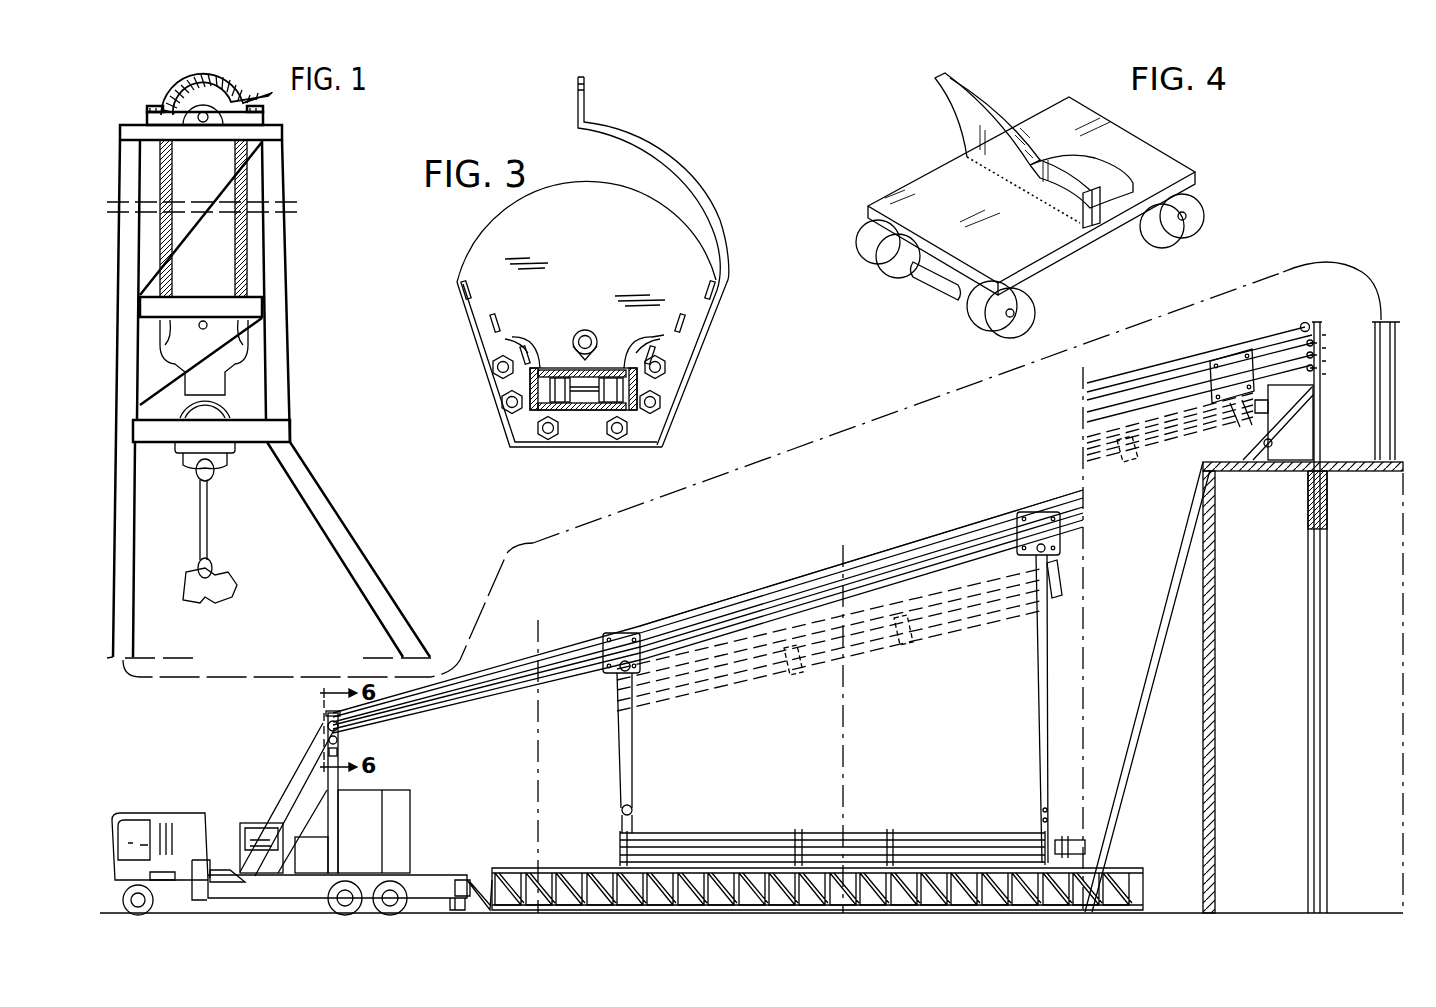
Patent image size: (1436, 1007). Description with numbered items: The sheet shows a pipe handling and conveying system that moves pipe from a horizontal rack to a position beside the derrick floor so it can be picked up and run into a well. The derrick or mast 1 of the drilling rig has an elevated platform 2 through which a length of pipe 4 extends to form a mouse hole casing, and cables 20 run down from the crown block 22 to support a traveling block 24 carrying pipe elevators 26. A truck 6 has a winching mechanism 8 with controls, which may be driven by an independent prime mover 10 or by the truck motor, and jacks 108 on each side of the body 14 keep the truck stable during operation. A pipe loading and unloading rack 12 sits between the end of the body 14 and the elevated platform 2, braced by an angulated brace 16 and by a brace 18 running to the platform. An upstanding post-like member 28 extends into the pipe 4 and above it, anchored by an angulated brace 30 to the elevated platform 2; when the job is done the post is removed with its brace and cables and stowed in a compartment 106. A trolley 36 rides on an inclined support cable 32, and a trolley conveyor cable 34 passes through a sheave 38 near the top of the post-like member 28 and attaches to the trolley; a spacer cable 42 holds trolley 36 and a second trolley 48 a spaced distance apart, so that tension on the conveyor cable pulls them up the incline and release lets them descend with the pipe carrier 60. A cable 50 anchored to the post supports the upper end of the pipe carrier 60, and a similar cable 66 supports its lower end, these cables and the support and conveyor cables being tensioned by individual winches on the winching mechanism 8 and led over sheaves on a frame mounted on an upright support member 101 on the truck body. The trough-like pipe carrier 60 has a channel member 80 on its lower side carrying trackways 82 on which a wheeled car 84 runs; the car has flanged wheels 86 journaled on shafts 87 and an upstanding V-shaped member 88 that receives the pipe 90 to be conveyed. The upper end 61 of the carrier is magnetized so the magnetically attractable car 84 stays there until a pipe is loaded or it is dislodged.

In FIG. 1, the derrick or mast 1 is at (292, 286).
In FIG. 1, the elevated platform 2 is at (1350, 473).
In FIG. 1, the pipe 4 is at (1327, 597).
In FIG. 1, the truck 6 is at (180, 806).
In FIG. 1, the winching mechanism 8 is at (236, 816).
In FIG. 1, the independent prime mover 10 is at (328, 848).
In FIG. 1, the pipe loading and unloading rack 12 is at (583, 866).
In FIG. 1, the body 14 is at (462, 872).
In FIG. 1, the angulated brace 16 is at (478, 880).
In FIG. 1, the brace 18 is at (1126, 768).
In FIG. 1, the cables 20 is at (248, 230).
In FIG. 1, the crown block 22 is at (185, 100).
In FIG. 1, the traveling block 24 is at (240, 325).
In FIG. 1, the pipe elevators 26 is at (208, 505).
In FIG. 1, the upstanding post-like member 28 is at (1323, 372).
In FIG. 1, the angulated brace 30 is at (1268, 445).
In FIG. 1, the support cable 32 is at (1293, 350).
In FIG. 1, the trolley conveyor cable 34 is at (960, 522).
In FIG. 1, the trolley 36 is at (1045, 505).
In FIG. 1, the sheave 38 is at (1308, 320).
In FIG. 1, the spacer cable 42 is at (722, 608).
In FIG. 1, the trolley 48 is at (615, 633).
In FIG. 1, the cable 50 is at (1062, 548).
In FIG. 1, the pipe carrier 60 is at (925, 640).
In FIG. 1, the upper end 61 is at (1048, 840).
In FIG. 1, the cable 66 is at (612, 725).
In FIG. 3, the channel member 80 is at (535, 412).
In FIG. 3, the trackways 82 is at (512, 405).
In FIG. 3, the wheeled car 84 is at (545, 331).
In FIG. 4, the wheeled car 84 is at (1172, 155).
In FIG. 3, the flanged wheels 86 is at (624, 385).
In FIG. 4, the flanged wheels 86 is at (1165, 243).
In FIG. 3, the shafts 87 is at (583, 395).
In FIG. 4, the shafts 87 is at (945, 288).
In FIG. 3, the upstanding V-shaped member 88 is at (618, 345).
In FIG. 4, the upstanding V-shaped member 88 is at (995, 112).
In FIG. 1, the pipe 90 is at (1085, 847).
In FIG. 3, the pipe 90 is at (580, 330).
In FIG. 1, the upright support member 101 is at (338, 747).
In FIG. 1, the compartment 106 is at (373, 795).
In FIG. 1, the jacks 108 is at (453, 878).